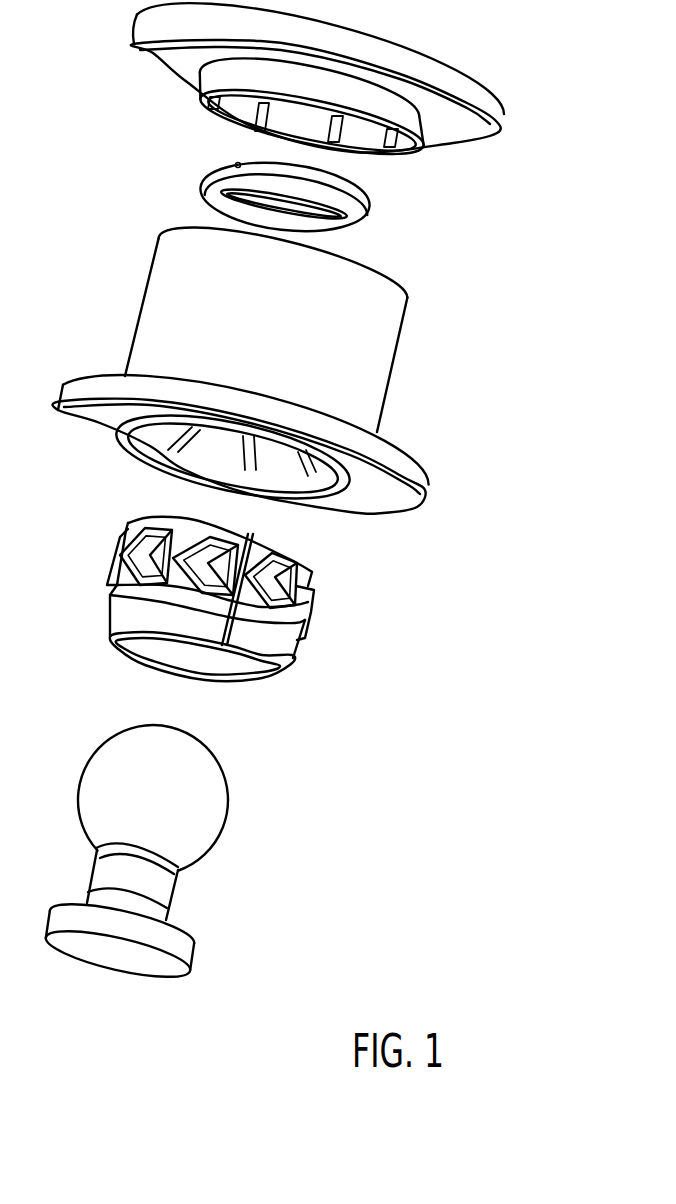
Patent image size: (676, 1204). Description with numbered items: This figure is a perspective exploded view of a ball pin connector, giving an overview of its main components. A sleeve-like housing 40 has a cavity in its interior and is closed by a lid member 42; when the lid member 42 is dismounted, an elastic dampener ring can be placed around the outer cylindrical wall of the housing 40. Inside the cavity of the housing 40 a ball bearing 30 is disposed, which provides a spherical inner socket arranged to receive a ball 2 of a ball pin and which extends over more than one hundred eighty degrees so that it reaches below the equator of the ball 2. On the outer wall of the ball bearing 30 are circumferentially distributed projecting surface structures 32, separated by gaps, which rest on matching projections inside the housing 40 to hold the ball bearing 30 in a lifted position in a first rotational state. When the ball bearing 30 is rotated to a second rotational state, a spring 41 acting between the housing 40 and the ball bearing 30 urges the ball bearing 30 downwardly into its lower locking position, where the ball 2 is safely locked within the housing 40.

The ball 2 is at (228, 819).
The ball bearing 30 is at (265, 599).
The projecting surface structures 32 is at (288, 538).
The housing 40 is at (398, 343).
The spring 41 is at (362, 214).
The lid member 42 is at (503, 116).